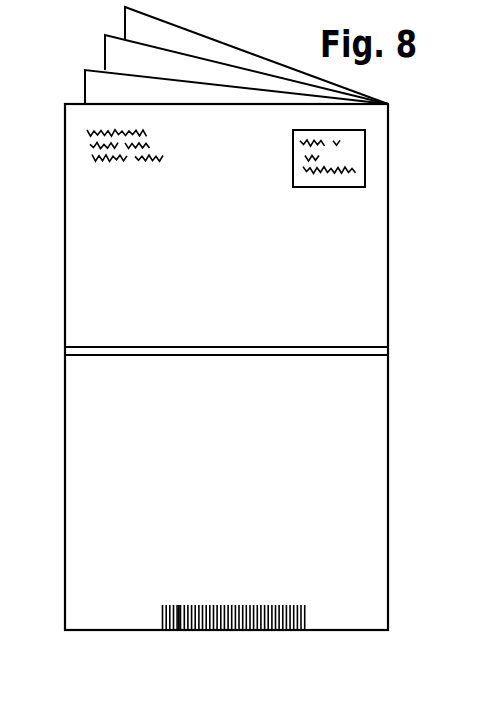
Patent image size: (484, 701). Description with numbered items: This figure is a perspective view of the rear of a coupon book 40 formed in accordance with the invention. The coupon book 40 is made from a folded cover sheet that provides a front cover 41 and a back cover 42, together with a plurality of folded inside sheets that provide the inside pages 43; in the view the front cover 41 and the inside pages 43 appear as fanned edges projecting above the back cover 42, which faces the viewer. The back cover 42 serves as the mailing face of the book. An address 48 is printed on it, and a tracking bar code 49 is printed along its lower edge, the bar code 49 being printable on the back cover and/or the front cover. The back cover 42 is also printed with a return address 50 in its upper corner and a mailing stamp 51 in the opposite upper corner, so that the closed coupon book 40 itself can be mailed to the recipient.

The coupon book 40 is at (65, 403).
The front cover 41 is at (240, 50).
The back cover 42 is at (80, 502).
The inside pages 43 is at (105, 53).
The address 48 is at (150, 247).
The tracking bar code 49 is at (245, 605).
The return address 50 is at (88, 142).
The mailing stamp 51 is at (293, 158).